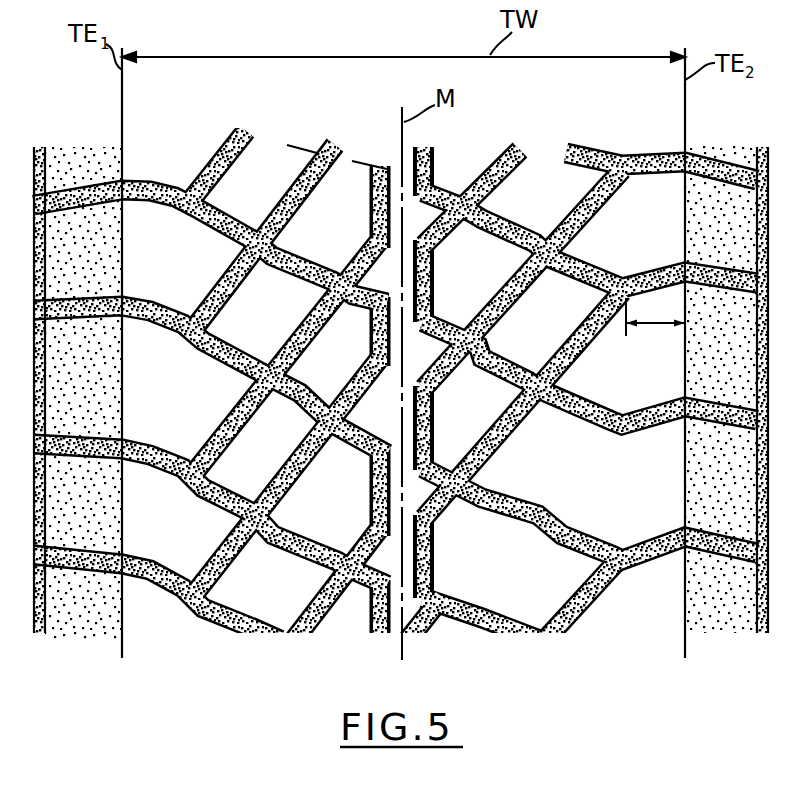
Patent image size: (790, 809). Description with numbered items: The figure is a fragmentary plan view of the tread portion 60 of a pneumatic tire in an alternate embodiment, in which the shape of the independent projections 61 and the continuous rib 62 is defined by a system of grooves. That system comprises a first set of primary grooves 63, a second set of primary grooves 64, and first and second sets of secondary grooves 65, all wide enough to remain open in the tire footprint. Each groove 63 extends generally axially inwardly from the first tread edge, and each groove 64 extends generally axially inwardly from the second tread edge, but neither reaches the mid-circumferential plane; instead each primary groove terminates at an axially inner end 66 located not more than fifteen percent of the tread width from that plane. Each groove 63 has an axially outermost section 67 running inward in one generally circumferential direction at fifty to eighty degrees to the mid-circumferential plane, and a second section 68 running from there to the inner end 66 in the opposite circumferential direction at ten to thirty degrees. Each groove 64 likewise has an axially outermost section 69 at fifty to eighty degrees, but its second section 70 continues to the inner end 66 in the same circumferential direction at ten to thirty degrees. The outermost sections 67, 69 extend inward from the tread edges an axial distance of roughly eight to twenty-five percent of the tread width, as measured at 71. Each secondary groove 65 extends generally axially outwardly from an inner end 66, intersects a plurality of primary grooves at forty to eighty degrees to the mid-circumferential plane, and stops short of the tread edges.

The tread portion 60 is at (198, 683).
The independent projections 61 is at (256, 211).
The continuous rib 62 is at (417, 150).
The first set of primary grooves 63 is at (167, 212).
The second set of primary grooves 64 is at (648, 150).
The secondary grooves 65 is at (272, 266).
The axially inner end 66 is at (420, 385).
The axially outermost section 67 is at (148, 180).
The second section 68 is at (288, 203).
The axially outermost section 69 is at (641, 172).
The second section 70 is at (496, 298).
The axial extent of outermost section 71 is at (633, 327).